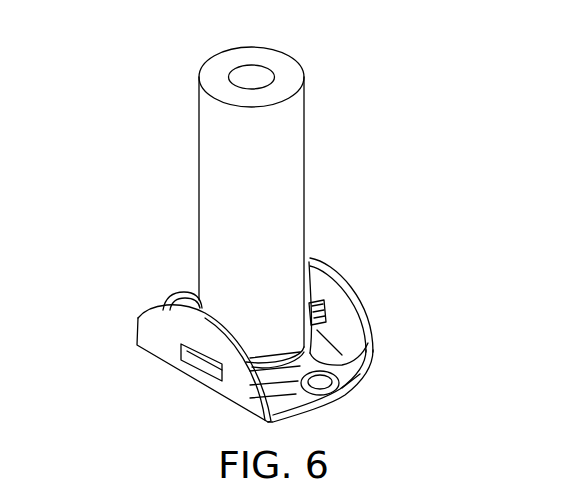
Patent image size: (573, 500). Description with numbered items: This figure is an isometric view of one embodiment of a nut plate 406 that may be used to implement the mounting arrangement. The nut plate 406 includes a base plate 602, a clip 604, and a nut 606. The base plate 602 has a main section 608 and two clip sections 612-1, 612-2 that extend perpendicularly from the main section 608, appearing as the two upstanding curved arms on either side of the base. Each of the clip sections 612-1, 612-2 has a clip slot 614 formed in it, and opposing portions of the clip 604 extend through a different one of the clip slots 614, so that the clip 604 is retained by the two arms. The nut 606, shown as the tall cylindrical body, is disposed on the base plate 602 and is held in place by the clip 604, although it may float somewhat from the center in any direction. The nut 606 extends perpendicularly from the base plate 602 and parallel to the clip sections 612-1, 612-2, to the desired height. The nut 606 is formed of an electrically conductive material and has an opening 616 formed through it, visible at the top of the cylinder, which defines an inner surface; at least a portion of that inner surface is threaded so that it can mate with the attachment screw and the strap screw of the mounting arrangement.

The nut plate 406 is at (387, 92).
The base plate 602 is at (368, 370).
The clip 604 is at (322, 356).
The nut 606 is at (295, 158).
The main section 608 is at (349, 364).
The first clip section 612-1 is at (142, 318).
The second clip section 612-2 is at (312, 258).
The clip slot 614 is at (179, 367).
The opening 616 is at (252, 71).